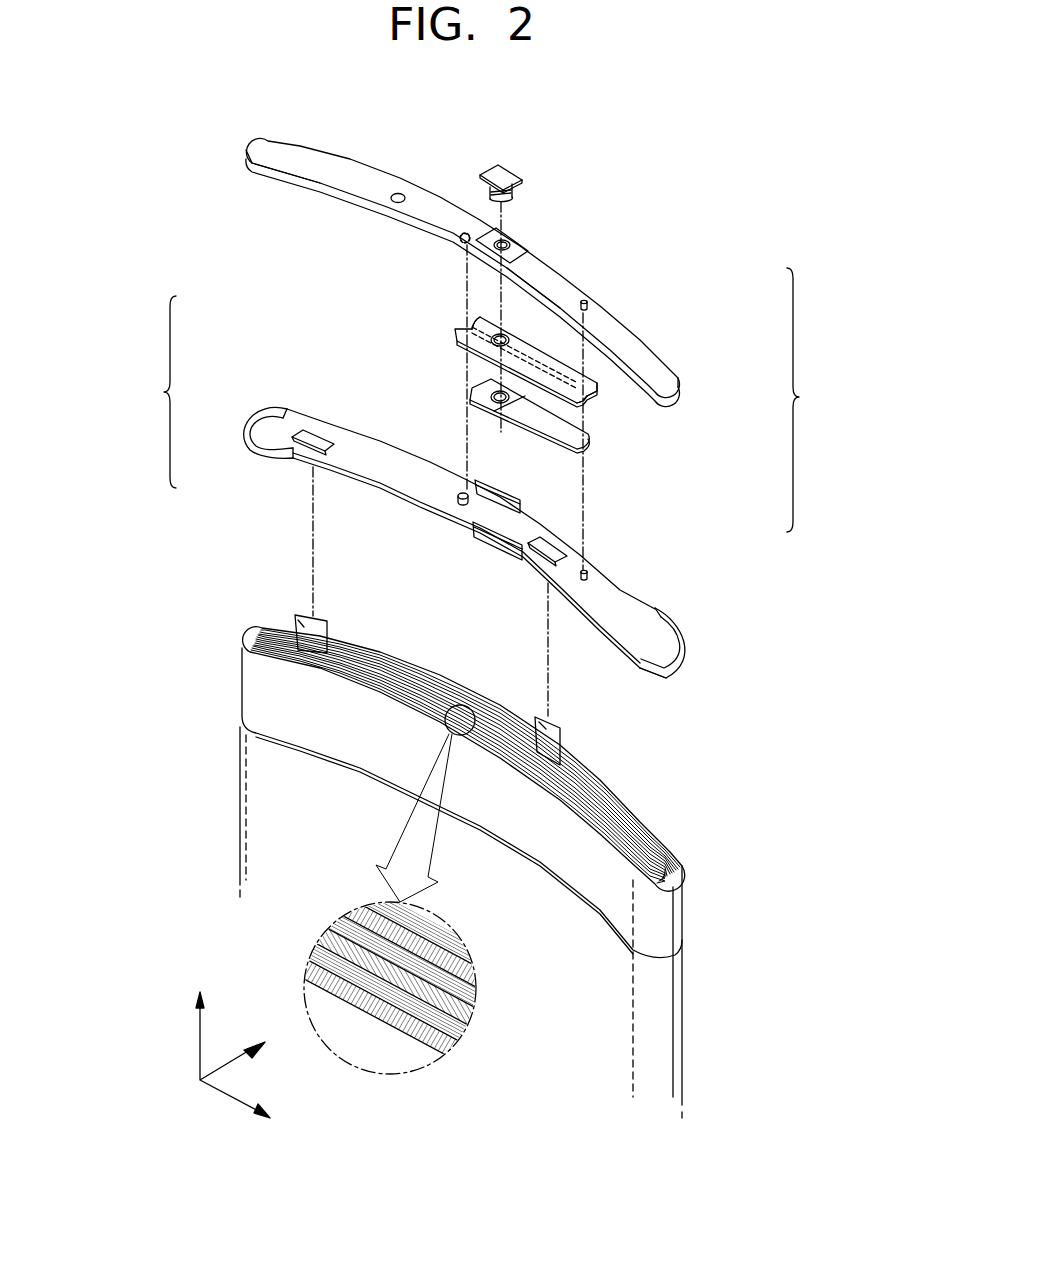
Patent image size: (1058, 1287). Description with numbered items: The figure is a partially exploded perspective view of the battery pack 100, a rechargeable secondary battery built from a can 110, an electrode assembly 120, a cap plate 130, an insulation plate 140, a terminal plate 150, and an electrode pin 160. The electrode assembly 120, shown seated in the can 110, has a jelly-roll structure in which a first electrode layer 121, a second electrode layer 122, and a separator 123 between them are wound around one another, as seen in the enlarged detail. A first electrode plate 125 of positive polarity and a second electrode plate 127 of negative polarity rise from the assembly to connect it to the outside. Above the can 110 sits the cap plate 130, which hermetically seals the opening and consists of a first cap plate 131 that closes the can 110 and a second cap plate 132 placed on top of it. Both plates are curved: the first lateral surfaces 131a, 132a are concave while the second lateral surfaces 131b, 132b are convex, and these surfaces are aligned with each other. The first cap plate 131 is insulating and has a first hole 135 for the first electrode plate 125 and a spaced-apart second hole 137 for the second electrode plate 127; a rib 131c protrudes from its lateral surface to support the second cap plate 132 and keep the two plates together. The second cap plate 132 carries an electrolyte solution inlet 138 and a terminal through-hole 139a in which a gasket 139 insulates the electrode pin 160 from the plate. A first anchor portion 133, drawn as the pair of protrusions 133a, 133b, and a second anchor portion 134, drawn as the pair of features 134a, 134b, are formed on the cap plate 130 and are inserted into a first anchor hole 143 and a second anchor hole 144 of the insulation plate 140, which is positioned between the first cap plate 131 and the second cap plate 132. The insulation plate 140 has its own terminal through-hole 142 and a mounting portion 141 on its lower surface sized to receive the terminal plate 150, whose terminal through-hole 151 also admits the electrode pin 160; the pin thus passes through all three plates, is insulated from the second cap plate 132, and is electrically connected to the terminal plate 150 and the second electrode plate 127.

The battery pack 100 is at (720, 162).
The can 110 is at (675, 1052).
The electrode assembly 120 is at (503, 826).
The first electrode layer 121 is at (480, 976).
The second electrode layer 122 is at (478, 1022).
The separator 123 is at (483, 998).
The first electrode plate 125 is at (298, 618).
The second electrode plate 127 is at (557, 740).
The cap plate 130 is at (232, 152).
The first cap plate 131 is at (480, 553).
The first lateral surface 131a is at (423, 508).
The second lateral surface 131b is at (545, 528).
The rib 131c is at (673, 668).
The second cap plate 132 is at (655, 360).
The first lateral surface 132a is at (300, 189).
The second lateral surface 132b is at (570, 268).
The first anchor portion 133 is at (812, 400).
The first coupling pin 133a is at (590, 575).
The second coupling pin 133b is at (590, 306).
The second anchor portion 134 is at (152, 392).
The first coupling hole 134a is at (457, 495).
The second coupling hole 134b is at (462, 235).
The first hole 135 is at (310, 438).
The second hole 137 is at (545, 551).
The electrolyte solution inlet 138 is at (398, 193).
The gasket 139 is at (481, 236).
The terminal through-hole 139a is at (494, 248).
The insulation plate 140 is at (505, 370).
The mounting portion 141 is at (586, 392).
The terminal through-hole 142 is at (486, 348).
The first anchor hole 143 is at (585, 404).
The second anchor hole 144 is at (458, 320).
The terminal plate 150 is at (562, 449).
The terminal through-hole 151 is at (498, 406).
The electrode pin 160 is at (508, 177).